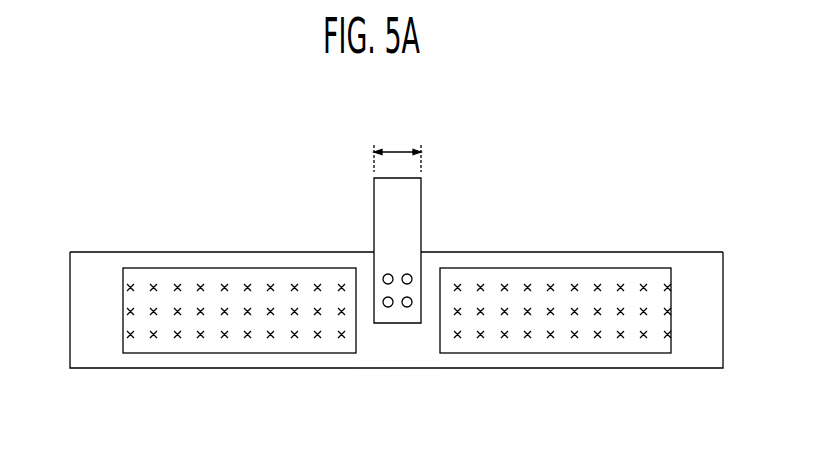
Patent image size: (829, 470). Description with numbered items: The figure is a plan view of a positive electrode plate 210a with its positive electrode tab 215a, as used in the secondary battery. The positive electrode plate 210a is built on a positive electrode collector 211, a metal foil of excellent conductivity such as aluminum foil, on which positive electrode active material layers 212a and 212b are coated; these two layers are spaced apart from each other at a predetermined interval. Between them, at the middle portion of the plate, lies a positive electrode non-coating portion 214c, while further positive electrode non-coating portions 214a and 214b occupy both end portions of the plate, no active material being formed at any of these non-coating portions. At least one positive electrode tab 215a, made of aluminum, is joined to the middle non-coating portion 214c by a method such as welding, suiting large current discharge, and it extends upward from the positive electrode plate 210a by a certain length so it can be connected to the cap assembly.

The positive electrode plate 210a is at (96, 182).
The positive electrode collector 211 is at (223, 252).
The positive electrode active material layer 212a is at (203, 352).
The positive electrode active material layer 212b is at (533, 347).
The positive electrode non-coating portion 214a is at (93, 360).
The positive electrode non-coating portion 214b is at (695, 360).
The positive electrode non-coating portion 214c is at (403, 362).
The positive electrode tab 215a is at (421, 218).